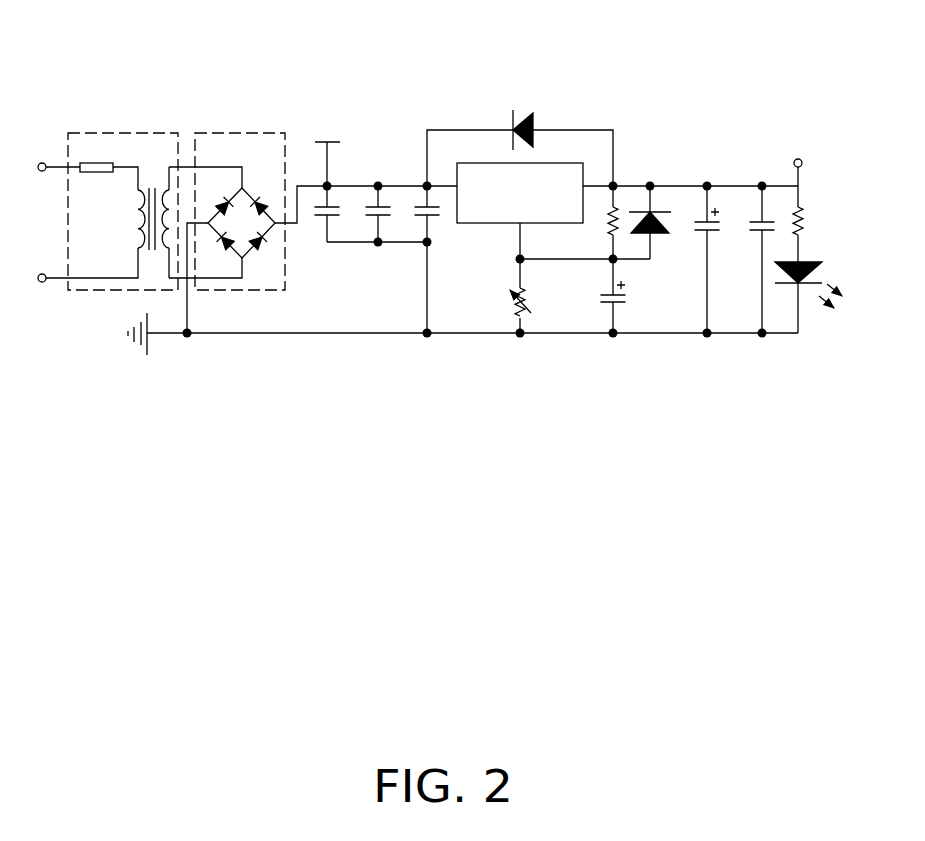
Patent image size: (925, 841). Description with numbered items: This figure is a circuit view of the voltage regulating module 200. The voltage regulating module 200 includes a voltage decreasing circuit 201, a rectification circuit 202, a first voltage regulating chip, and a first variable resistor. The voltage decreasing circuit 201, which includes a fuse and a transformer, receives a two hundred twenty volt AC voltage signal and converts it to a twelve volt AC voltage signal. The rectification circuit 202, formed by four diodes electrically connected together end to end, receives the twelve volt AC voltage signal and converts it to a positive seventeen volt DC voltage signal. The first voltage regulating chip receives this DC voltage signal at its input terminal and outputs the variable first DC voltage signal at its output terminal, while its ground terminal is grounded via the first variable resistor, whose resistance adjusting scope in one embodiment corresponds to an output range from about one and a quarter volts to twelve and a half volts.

The voltage regulating module 200 is at (572, 68).
The voltage decreasing circuit 201 is at (145, 132).
The rectification circuit 202 is at (248, 132).